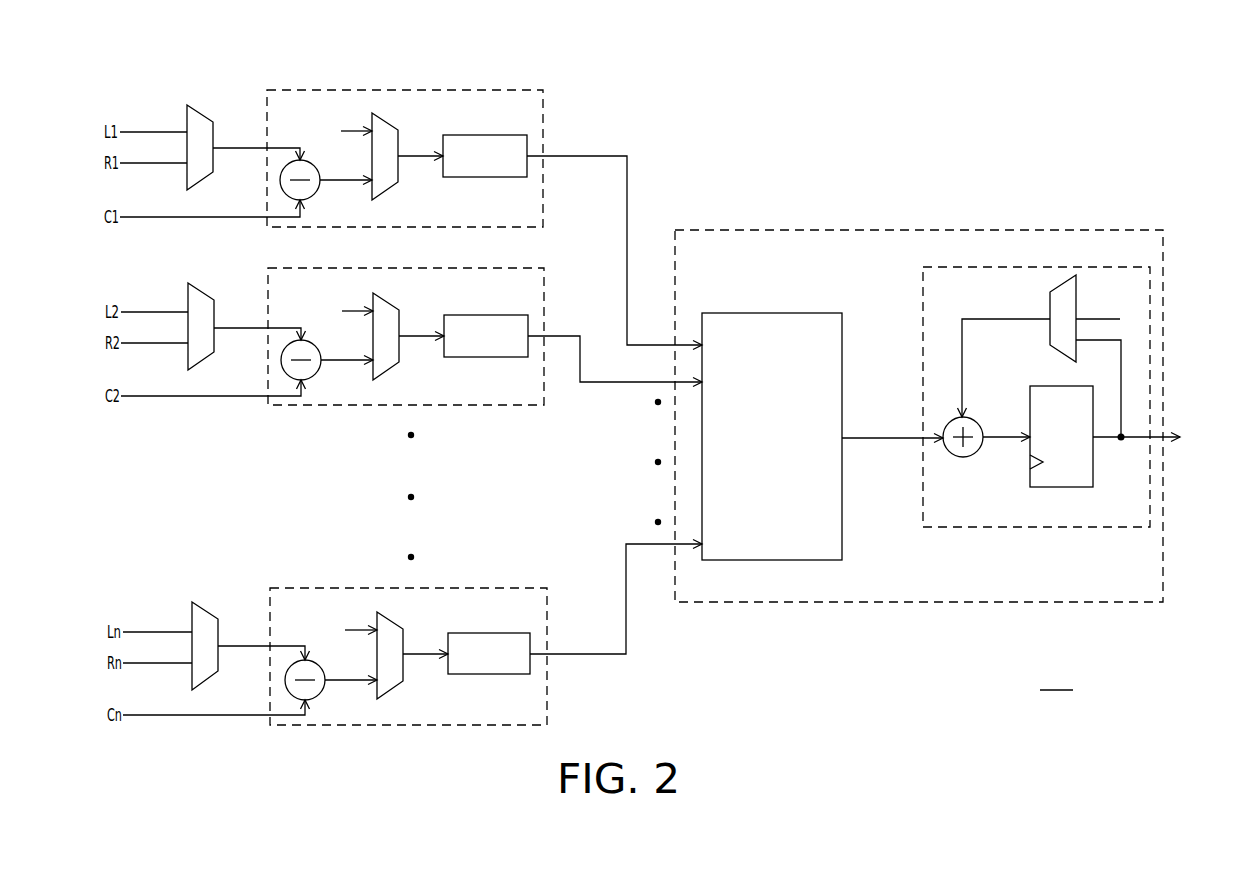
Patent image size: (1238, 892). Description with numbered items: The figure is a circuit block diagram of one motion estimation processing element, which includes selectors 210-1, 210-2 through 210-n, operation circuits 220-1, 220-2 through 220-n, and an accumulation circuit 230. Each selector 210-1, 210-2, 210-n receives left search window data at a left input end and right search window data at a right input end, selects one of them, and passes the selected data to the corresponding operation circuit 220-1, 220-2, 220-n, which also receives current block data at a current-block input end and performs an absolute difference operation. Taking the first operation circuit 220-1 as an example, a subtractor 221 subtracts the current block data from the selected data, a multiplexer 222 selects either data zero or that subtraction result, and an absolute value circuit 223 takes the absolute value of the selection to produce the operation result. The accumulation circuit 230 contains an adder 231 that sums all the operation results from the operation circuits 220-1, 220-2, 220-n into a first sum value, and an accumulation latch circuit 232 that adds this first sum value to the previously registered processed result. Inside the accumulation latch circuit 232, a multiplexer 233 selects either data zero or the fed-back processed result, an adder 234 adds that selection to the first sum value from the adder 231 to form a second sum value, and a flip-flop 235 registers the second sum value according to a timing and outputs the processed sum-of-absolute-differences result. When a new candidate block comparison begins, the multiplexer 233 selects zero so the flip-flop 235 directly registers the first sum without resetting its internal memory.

The selector 210-1 is at (205, 178).
The selector 210-2 is at (206, 358).
The selector 210-n is at (210, 678).
The operation circuit 220-1 is at (543, 105).
The operation circuit 220-2 is at (544, 283).
The operation circuit 220-n is at (547, 603).
The subtractor 221 is at (318, 195).
The multiplexer 222 is at (390, 186).
The absolute value circuit 223 is at (485, 177).
The accumulation circuit 230 is at (910, 228).
The adder 231 is at (772, 313).
The accumulation latch circuit 232 is at (922, 330).
The multiplexer 233 is at (1060, 280).
The adder 234 is at (975, 455).
The flip-flop 235 is at (1093, 472).